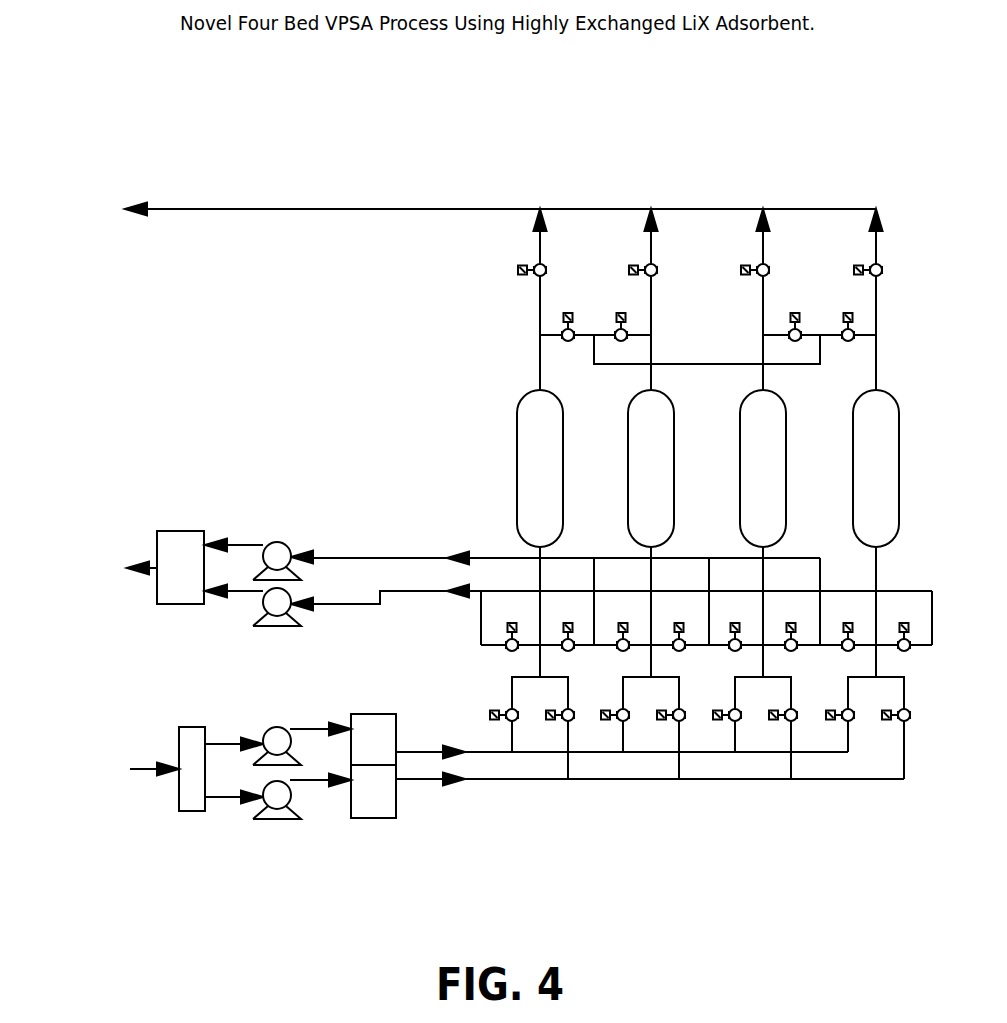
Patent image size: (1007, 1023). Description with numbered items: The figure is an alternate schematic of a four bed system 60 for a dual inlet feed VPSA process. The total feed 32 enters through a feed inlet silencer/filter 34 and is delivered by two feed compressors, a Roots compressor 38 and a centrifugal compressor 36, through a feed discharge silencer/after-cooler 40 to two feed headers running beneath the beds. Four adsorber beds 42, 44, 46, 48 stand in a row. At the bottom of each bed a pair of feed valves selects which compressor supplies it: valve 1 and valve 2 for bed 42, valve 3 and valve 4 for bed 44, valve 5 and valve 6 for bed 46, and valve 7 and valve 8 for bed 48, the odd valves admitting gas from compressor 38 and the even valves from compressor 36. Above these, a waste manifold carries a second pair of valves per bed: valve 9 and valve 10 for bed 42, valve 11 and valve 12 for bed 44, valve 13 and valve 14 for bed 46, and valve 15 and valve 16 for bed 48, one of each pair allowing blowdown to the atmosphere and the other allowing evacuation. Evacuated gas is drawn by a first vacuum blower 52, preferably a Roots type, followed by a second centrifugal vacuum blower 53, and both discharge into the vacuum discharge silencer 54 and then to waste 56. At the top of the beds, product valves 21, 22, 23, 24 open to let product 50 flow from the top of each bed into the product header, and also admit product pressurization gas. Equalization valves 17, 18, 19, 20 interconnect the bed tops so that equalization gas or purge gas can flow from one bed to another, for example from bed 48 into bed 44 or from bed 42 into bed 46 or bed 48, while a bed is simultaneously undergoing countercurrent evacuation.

The valve 1 is at (511, 715).
The valve 2 is at (567, 715).
The valve 3 is at (622, 715).
The valve 4 is at (678, 715).
The valve 5 is at (734, 715).
The valve 6 is at (790, 715).
The valve 7 is at (847, 715).
The valve 8 is at (903, 715).
The valve 9 is at (512, 649).
The valve 10 is at (568, 649).
The valve 11 is at (623, 649).
The valve 12 is at (679, 649).
The valve 13 is at (735, 649).
The valve 14 is at (791, 649).
The valve 15 is at (848, 649).
The valve 16 is at (904, 649).
The valve 17 is at (568, 339).
The valve 18 is at (621, 339).
The valve 19 is at (795, 339).
The valve 20 is at (848, 339).
The valve 21 is at (545, 270).
The valve 22 is at (656, 270).
The valve 23 is at (768, 270).
The valve 24 is at (881, 270).
The feed 32 is at (148, 771).
The feed inlet silencer/filter 34 is at (188, 813).
The feed compressor 36 is at (281, 820).
The feed compressor 38 is at (289, 734).
The feed discharge silencer/after-cooler 40 is at (378, 819).
The adsorber bed 42 is at (517, 527).
The adsorber bed 44 is at (628, 527).
The adsorber bed 46 is at (740, 527).
The adsorber bed 48 is at (853, 527).
The product 50 is at (190, 211).
The vacuum compressor 52 is at (289, 542).
The second vacuum blower 53 is at (281, 627).
The vacuum discharge silencer 54 is at (185, 605).
The waste 56 is at (151, 571).
The four bed system 60 is at (564, 812).